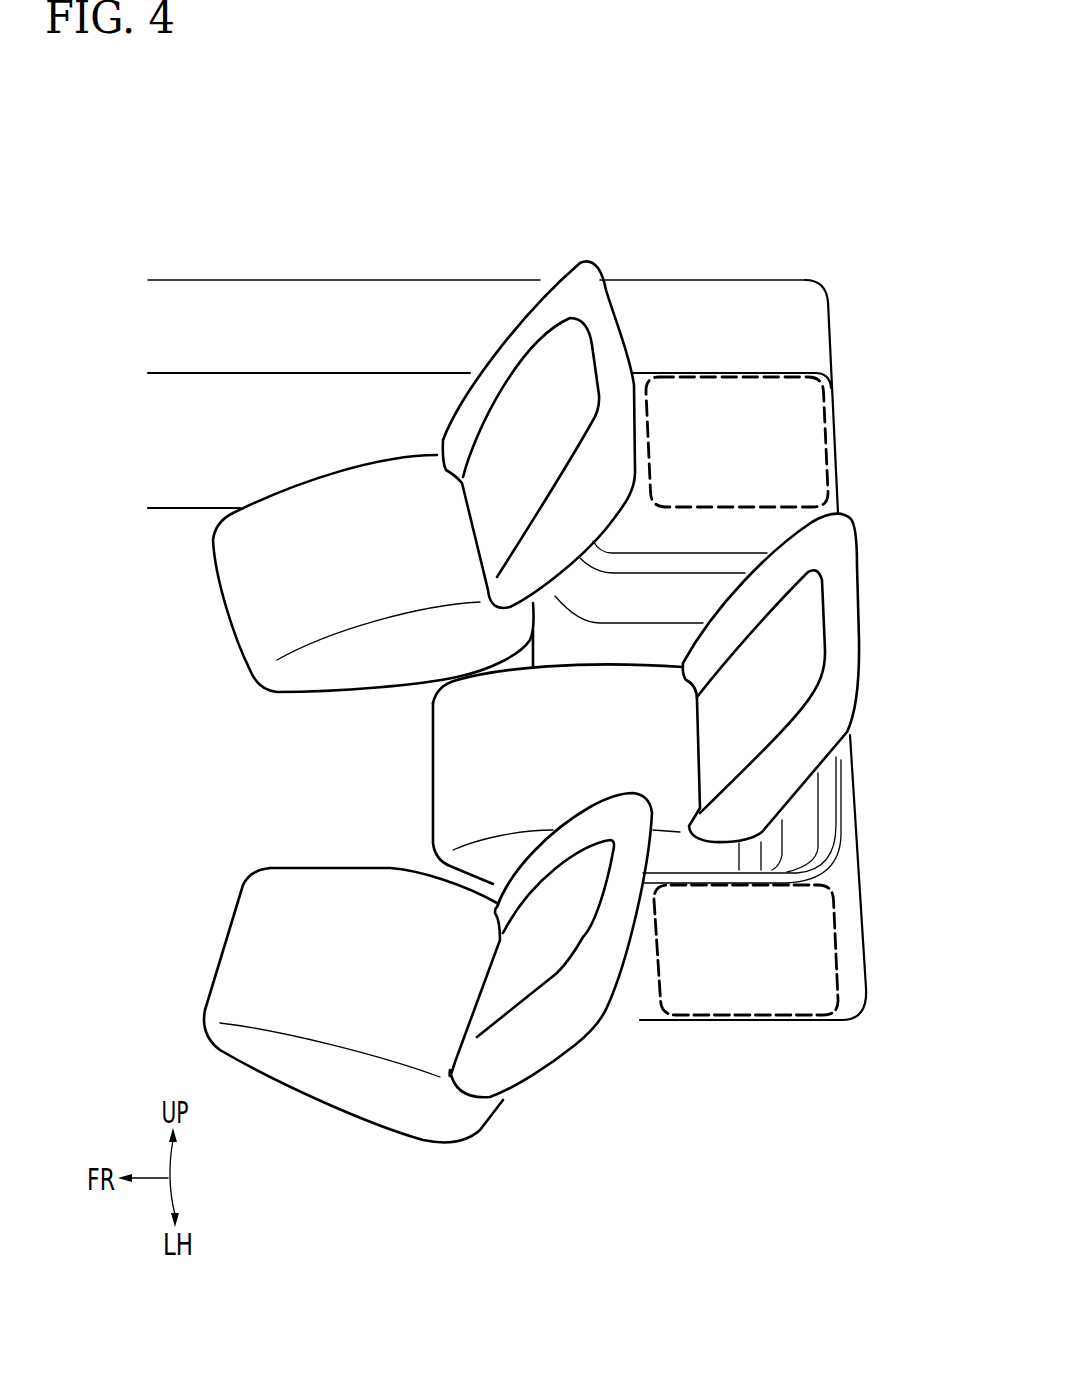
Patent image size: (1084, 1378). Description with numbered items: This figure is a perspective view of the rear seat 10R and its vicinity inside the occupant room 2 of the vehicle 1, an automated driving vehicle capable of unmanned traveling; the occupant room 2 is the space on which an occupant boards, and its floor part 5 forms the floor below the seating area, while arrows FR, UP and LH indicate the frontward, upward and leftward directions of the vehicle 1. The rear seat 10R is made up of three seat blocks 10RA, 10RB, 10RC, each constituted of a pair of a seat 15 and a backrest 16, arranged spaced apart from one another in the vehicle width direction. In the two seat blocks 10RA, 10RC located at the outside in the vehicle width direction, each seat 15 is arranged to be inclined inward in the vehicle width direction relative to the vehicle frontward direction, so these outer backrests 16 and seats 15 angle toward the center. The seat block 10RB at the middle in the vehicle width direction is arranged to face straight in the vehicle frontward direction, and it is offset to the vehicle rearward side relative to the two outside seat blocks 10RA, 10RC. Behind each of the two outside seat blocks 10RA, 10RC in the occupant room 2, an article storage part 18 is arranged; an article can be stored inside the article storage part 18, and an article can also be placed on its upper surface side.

The vehicle 1 is at (698, 239).
The occupant room 2 is at (167, 583).
The floor part 5 is at (220, 760).
The rear seat 10R is at (596, 253).
The seat block 10RA is at (623, 337).
The seat block 10RB is at (847, 703).
The seat block 10RC is at (543, 1083).
The seat 15 is at (353, 505).
The backrest 16 is at (530, 398).
The article storage part 18 is at (803, 457).